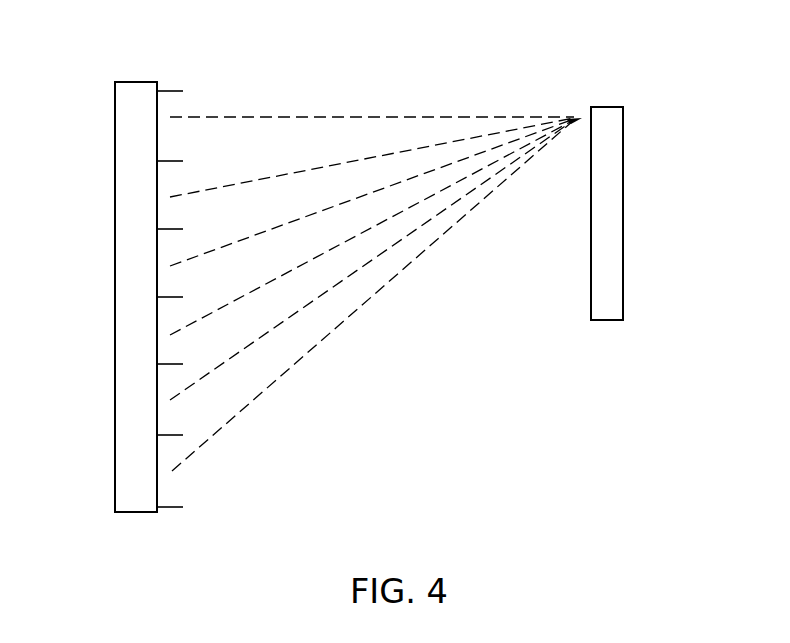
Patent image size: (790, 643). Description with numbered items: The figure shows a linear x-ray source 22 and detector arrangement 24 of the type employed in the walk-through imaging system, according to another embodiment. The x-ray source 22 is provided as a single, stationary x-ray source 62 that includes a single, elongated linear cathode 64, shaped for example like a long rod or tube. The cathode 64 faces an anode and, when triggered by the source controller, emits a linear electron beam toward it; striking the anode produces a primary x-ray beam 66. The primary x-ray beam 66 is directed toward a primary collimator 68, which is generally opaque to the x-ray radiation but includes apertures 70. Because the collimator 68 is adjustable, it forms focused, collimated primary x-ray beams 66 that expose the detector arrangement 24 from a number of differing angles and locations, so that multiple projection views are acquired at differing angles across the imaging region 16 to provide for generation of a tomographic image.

The imaging region / field of view 16 is at (430, 318).
The x-ray source 22 is at (144, 62).
The detector arrangement 24 is at (568, 39).
The stationary x-ray source 62 is at (96, 166).
The linear cathode 64 is at (135, 512).
The primary x-ray beam 66 is at (323, 150).
The primary collimator 68 is at (177, 522).
The apertures 70 is at (196, 421).